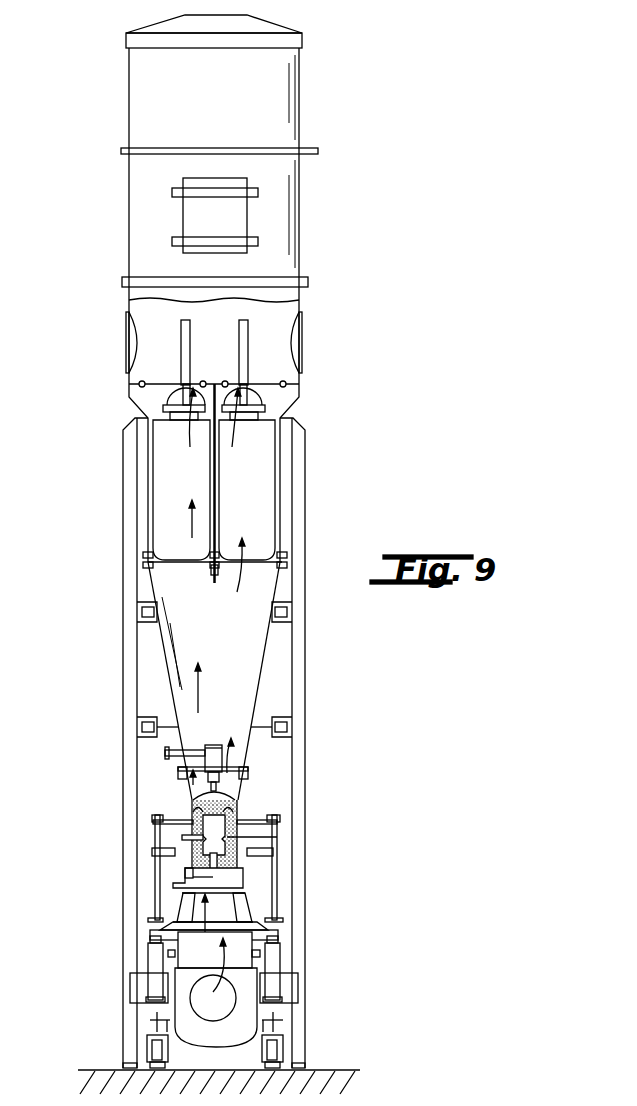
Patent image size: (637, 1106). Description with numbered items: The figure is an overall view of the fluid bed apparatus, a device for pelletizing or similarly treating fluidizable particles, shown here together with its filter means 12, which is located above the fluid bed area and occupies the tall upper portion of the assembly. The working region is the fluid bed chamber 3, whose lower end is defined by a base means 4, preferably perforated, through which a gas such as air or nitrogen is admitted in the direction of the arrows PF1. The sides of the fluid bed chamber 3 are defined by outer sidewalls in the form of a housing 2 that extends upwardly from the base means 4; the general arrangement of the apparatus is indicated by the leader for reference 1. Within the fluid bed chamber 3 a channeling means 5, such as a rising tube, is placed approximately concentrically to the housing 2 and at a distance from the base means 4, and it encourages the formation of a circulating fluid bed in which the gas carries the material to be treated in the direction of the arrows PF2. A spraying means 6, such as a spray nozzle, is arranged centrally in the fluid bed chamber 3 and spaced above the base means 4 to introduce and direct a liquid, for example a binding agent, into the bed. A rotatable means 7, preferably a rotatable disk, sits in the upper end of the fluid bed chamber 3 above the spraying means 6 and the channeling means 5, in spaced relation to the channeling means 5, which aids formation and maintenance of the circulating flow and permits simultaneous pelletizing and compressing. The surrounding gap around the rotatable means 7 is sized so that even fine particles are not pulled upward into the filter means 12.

The separating cone 1 is at (246, 798).
The housing 2 is at (188, 784).
The fluid bed chamber 3 is at (181, 793).
The base means 4 is at (232, 873).
The channeling means 5 is at (228, 830).
The spraying means 6 is at (233, 862).
The rotatable means 7 is at (240, 808).
The filter means 12 is at (278, 468).
The arrows PF1 is at (203, 913).
The arrows PF2 is at (193, 802).